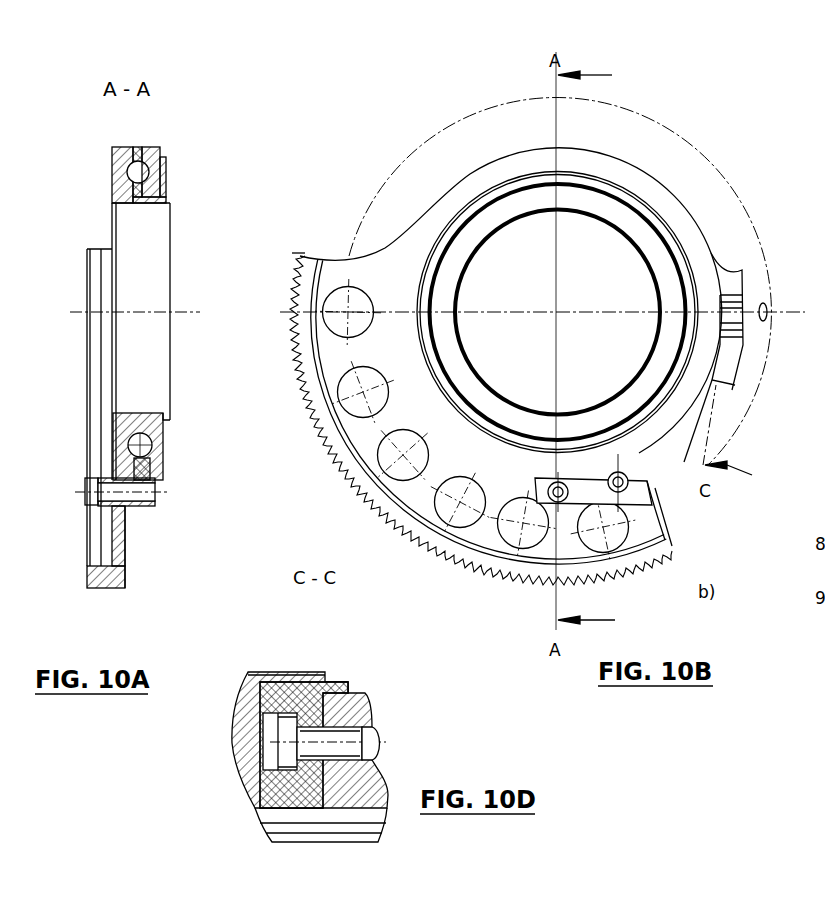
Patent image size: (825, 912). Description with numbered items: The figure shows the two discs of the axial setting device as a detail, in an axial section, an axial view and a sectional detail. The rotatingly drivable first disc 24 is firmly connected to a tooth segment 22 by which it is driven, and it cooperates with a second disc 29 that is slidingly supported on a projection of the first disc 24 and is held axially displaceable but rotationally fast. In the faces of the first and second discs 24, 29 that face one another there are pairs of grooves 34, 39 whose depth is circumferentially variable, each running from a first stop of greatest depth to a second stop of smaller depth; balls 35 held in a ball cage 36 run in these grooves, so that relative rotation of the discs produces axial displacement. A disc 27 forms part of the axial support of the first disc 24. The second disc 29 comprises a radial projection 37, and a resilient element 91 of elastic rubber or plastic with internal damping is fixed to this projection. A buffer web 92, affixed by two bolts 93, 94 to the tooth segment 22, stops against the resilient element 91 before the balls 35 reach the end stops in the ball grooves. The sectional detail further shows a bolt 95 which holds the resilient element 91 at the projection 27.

In FIG. 10A, the tooth segment 22 is at (103, 590).
In FIG. 10B, the tooth segment 22 is at (476, 585).
In FIG. 10A, the first disc 24 is at (122, 170).
In FIG. 10B, the first disc 24 is at (680, 216).
In FIG. 10B, the disc 27 is at (735, 282).
In FIG. 10A, the second disc 29 is at (165, 172).
In FIG. 10A, the groove 34 is at (152, 462).
In FIG. 10A, the balls 35 is at (145, 172).
In FIG. 10A, the ball cage 36 is at (142, 148).
In FIG. 10D, the radial projection 37 is at (356, 748).
In FIG. 10A, the groove 39 is at (163, 446).
In FIG. 10D, the resilient element 91 is at (325, 682).
In FIG. 10B, the buffer web 92 is at (677, 455).
In FIG. 10D, the buffer web 92 is at (258, 672).
In FIG. 10B, the bolt 93 is at (632, 490).
In FIG. 10B, the bolt 94 is at (565, 505).
In FIG. 10D, the bolt 95 is at (376, 752).